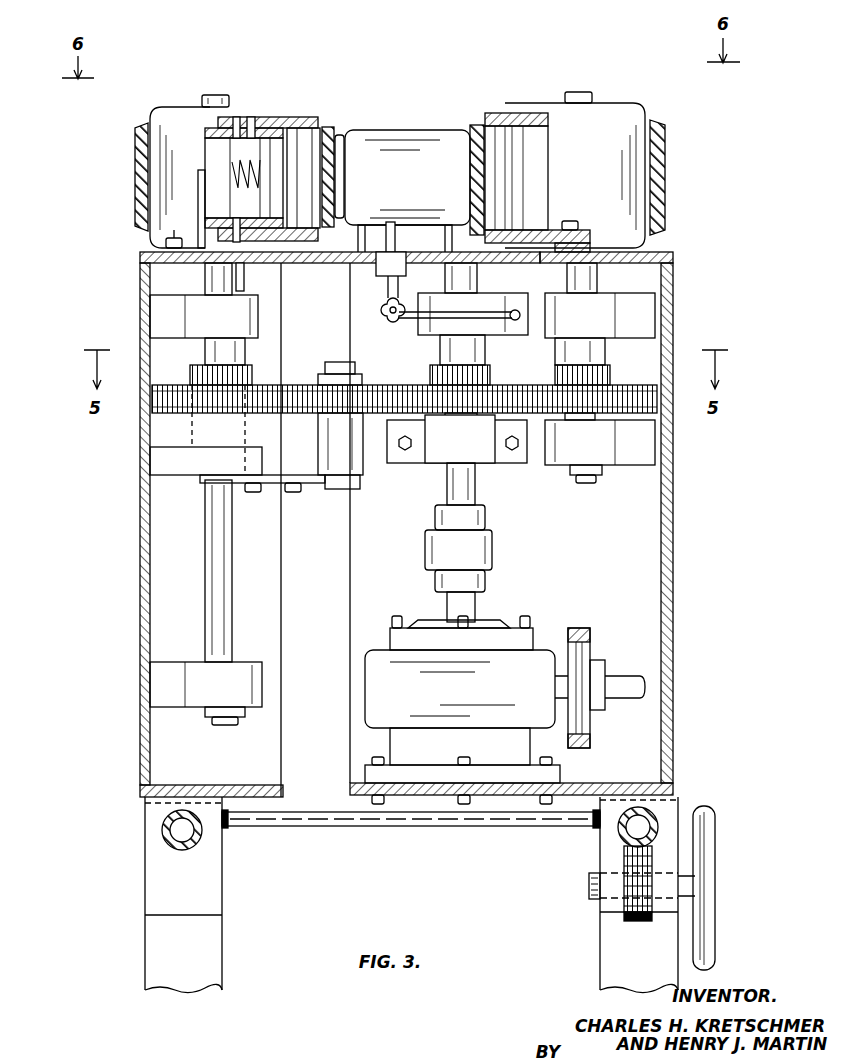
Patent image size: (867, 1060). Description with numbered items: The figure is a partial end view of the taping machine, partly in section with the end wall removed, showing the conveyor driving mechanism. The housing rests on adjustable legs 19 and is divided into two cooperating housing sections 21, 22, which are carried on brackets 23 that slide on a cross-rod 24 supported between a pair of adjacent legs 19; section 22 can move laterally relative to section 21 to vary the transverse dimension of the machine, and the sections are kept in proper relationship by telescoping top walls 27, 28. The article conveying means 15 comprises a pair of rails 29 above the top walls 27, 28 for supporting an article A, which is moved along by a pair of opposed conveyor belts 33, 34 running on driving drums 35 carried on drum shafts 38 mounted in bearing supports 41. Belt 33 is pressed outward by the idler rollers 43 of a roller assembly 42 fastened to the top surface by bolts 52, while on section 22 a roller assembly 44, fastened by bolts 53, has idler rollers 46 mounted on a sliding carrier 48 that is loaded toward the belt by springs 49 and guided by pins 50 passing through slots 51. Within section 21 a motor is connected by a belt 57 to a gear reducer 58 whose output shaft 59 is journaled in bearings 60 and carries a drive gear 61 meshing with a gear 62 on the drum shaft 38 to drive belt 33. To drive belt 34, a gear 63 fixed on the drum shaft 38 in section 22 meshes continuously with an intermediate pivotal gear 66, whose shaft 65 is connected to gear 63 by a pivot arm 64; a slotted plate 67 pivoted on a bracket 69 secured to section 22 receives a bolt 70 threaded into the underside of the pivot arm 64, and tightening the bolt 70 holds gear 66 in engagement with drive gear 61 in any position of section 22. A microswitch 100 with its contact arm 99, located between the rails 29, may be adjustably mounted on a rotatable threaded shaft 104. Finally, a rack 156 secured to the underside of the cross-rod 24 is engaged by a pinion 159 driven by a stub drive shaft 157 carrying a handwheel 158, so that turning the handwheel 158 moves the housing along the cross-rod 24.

The article conveying means 15 is at (526, 65).
The adjustable legs 19 is at (222, 944).
The housing section 21 is at (655, 715).
The housing section 22 is at (160, 727).
The brackets 23 is at (222, 889).
The cross-rod 24 is at (178, 846).
The telescoping top wall 27 is at (608, 252).
The telescoping top wall 28 is at (152, 252).
The rails 29 is at (450, 232).
The conveyor belt 33 is at (666, 194).
The conveyor belt 34 is at (136, 195).
The driving drum 35 is at (156, 122).
The drum shaft 38 is at (204, 99).
The bearing support 41 is at (176, 302).
The roller assembly 42 is at (540, 206).
The idler rollers 43 is at (500, 150).
The roller assembly 44 is at (212, 200).
The idler rollers 46 is at (340, 132).
The carrier 48 is at (284, 116).
The springs 49 is at (235, 170).
The pins 50 is at (238, 116).
The slots 51 is at (254, 116).
The bolts 52 is at (571, 222).
The bolts 53 is at (177, 229).
The belt 57 is at (590, 628).
The gear reducer 58 is at (500, 624).
The output shaft 59 is at (447, 610).
The bearings 60 is at (419, 464).
The drive gear 61 is at (496, 384).
The gear 62 is at (629, 386).
The gear 63 is at (170, 395).
The pivot arm 64 is at (360, 458).
The shaft 65 is at (332, 368).
The intermediate pivotal gear 66 is at (306, 406).
The plate 67 is at (268, 484).
The bracket 69 is at (183, 468).
The bolt 70 is at (293, 492).
The contact arm 99 is at (402, 227).
The microswitch 100 is at (417, 262).
The threaded shaft 104 is at (390, 322).
The rack 156 is at (624, 853).
The stub drive shaft 157 is at (588, 892).
The handwheel 158 is at (716, 932).
The pinion 159 is at (638, 922).
The article A is at (404, 130).